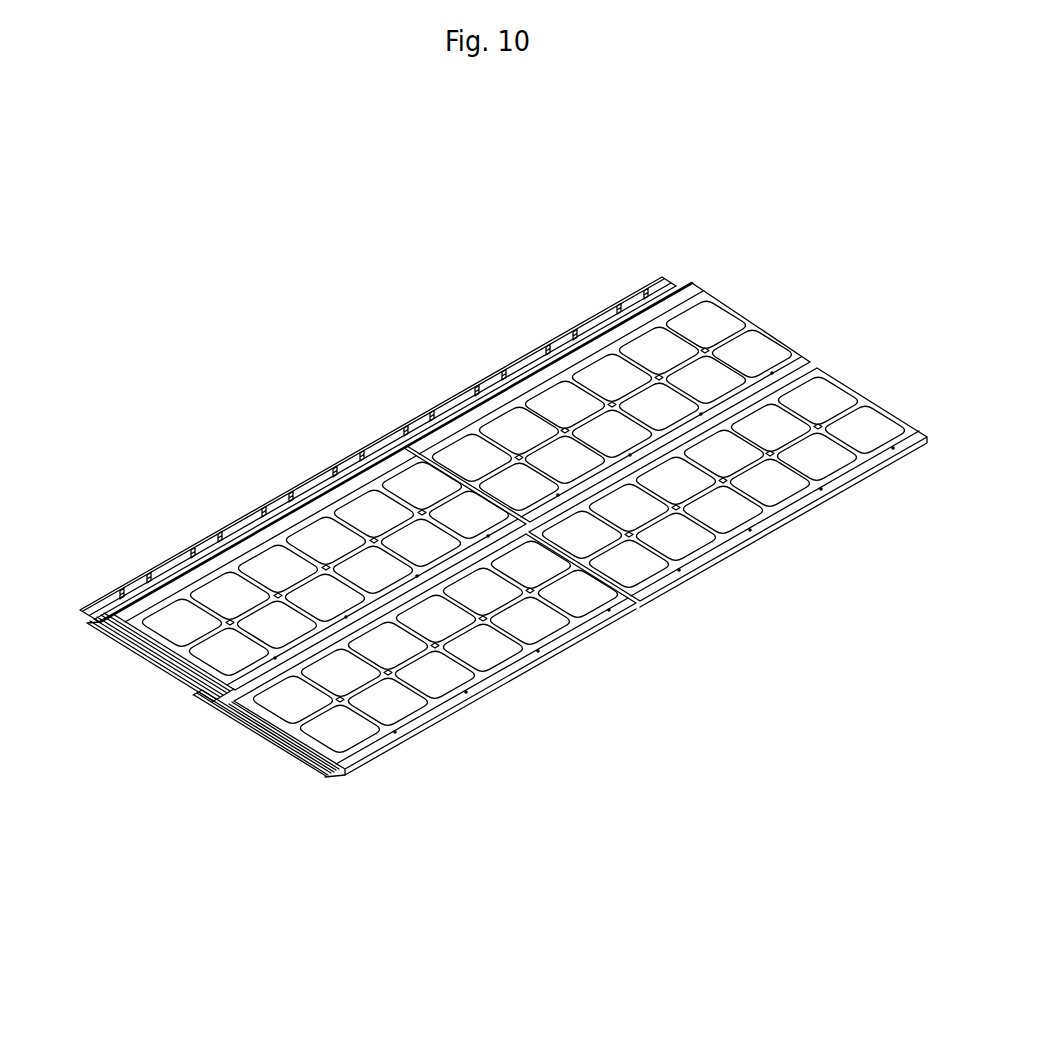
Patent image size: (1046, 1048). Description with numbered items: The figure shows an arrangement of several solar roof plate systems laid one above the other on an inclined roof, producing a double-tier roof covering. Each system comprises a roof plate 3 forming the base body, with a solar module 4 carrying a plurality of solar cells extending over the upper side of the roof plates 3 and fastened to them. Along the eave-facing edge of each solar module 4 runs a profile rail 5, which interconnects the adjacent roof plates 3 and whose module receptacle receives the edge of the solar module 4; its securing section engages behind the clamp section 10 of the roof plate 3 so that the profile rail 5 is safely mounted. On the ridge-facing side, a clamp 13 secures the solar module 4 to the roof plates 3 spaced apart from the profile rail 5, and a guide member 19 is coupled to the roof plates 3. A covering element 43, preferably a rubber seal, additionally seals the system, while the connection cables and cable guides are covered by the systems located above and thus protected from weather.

The roof plate 3 is at (280, 518).
The solar module 4 is at (693, 297).
The profile rail 5 is at (813, 360).
The clamp section 10 is at (360, 763).
The clamp 13 is at (363, 455).
The guide member 19 is at (197, 560).
The covering element 43 is at (543, 367).